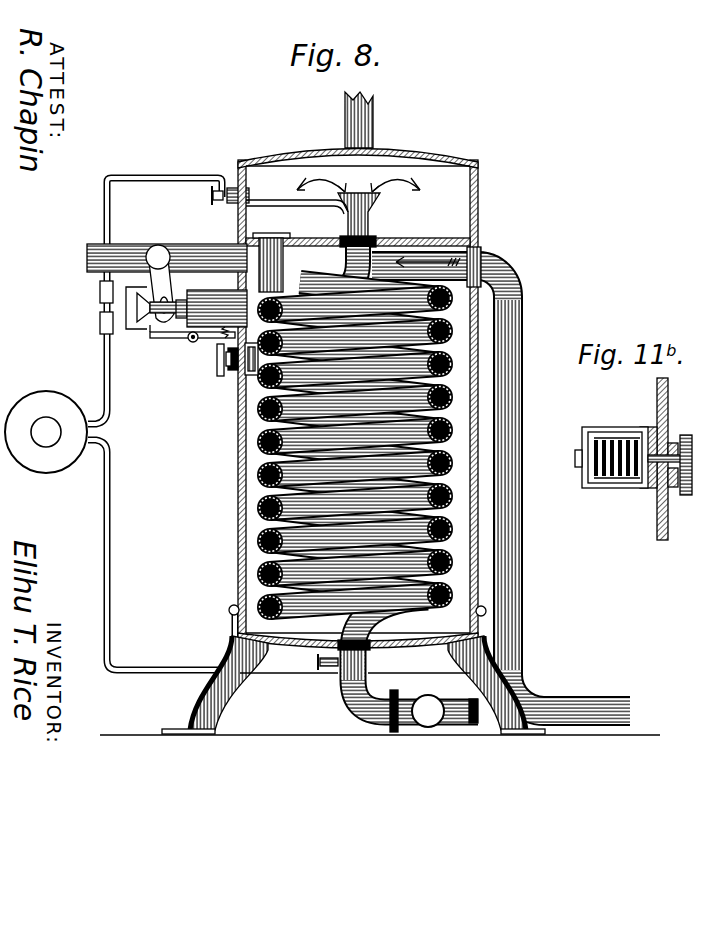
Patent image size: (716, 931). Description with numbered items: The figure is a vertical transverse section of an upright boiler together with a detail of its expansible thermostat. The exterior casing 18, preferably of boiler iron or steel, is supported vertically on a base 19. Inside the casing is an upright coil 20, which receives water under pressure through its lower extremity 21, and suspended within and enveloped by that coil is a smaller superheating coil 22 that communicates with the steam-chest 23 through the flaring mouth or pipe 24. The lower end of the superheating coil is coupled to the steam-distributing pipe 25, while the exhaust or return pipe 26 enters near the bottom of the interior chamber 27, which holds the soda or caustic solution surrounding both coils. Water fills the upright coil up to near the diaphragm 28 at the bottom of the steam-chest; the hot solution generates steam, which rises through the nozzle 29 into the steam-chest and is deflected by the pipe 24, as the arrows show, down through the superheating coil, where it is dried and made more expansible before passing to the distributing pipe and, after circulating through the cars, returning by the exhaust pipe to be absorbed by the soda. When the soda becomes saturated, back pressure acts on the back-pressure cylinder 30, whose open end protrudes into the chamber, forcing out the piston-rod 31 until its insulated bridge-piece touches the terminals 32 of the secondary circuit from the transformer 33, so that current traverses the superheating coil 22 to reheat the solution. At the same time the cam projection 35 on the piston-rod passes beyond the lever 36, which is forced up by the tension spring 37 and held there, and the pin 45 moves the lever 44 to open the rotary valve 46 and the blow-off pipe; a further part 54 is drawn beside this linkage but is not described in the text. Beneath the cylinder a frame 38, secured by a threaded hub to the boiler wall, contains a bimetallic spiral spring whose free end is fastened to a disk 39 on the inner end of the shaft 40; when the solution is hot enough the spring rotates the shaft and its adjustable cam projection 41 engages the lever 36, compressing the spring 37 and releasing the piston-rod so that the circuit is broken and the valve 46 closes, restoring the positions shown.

In FIG. 8, the exterior casing 18 is at (238, 489).
In FIG. 8, the base 19 is at (190, 700).
In FIG. 8, the upright coil 20 is at (450, 395).
In FIG. 8, the lower extremity 21 is at (340, 625).
In FIG. 8, the superheating coil 22 is at (355, 451).
In FIG. 8, the steam-chest 23 is at (358, 212).
In FIG. 8, the flaring mouth or pipe 24 is at (369, 217).
In FIG. 8, the steam-distributing pipe 25 is at (468, 716).
In FIG. 8, the exhaust or return pipe 26 is at (524, 538).
In FIG. 8, the interior chamber 27 is at (415, 654).
In FIG. 8, the diaphragm 28 is at (328, 270).
In FIG. 8, the nozzle 29 is at (269, 236).
In FIG. 8, the back-pressure cylinder 30 is at (192, 342).
In FIG. 8, the piston-rod 31 is at (179, 300).
In FIG. 8, the terminals 32 is at (100, 322).
In FIG. 8, the transformer 33 is at (120, 424).
In FIG. 8, the cam projection 35 is at (157, 340).
In FIG. 8, the lever 36 is at (165, 339).
In FIG. 8, the tension spring 37 is at (225, 338).
In FIG. 8, the frame 38 is at (249, 376).
In FIG. 11B, the frame 38 is at (616, 486).
In FIG. 8, the disk 39 is at (236, 370).
In FIG. 11B, the disk 39 is at (638, 478).
In FIG. 8, the shaft 40 is at (232, 374).
In FIG. 11B, the shaft 40 is at (686, 480).
In FIG. 8, the adjustable cam projection 41 is at (217, 362).
In FIG. 11B, the adjustable cam projection 41 is at (692, 463).
In FIG. 8, the lever 44 is at (176, 253).
In FIG. 8, the pin 45 is at (158, 325).
In FIG. 8, the rotary valve 46 is at (162, 250).
In FIG. 8, the bracket 54 is at (134, 300).